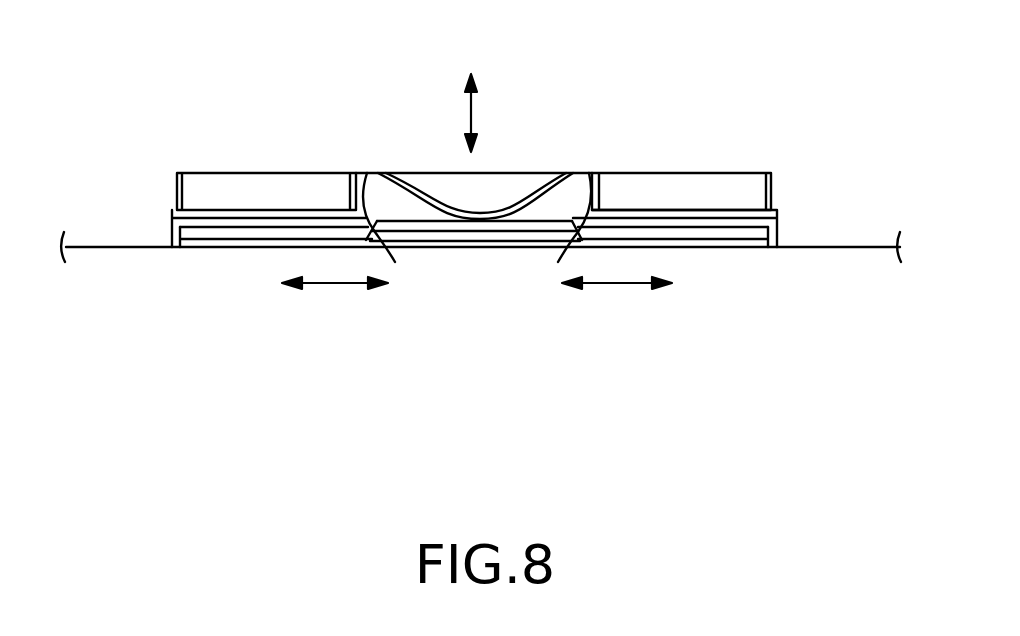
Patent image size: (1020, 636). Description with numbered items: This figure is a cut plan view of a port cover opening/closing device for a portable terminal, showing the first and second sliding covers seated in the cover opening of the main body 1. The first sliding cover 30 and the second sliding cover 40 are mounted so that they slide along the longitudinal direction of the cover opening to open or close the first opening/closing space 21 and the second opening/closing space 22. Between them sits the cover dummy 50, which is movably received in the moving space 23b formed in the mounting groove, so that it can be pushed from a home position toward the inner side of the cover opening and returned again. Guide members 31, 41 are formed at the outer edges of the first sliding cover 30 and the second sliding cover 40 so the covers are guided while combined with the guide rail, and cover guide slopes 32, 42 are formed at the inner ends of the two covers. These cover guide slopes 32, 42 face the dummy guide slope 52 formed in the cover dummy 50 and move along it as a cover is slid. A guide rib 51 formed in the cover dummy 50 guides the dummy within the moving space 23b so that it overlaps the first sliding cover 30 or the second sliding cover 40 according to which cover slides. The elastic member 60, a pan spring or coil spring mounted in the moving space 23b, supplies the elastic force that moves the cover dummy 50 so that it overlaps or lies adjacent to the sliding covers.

The main body 1 is at (833, 233).
The first opening/closing space 21 is at (173, 247).
The second opening/closing space 22 is at (668, 210).
The moving space 23b is at (520, 183).
The first sliding cover 30 is at (237, 248).
The guide member 31 is at (220, 232).
The cover guide slope 32 is at (393, 250).
The second sliding cover 40 is at (718, 250).
The guide member 41 is at (744, 233).
The cover guide slope 42 is at (585, 185).
The cover dummy 50 is at (440, 247).
The guide rib 51 is at (485, 231).
The dummy guide slope 52 is at (367, 173).
The elastic member 60 is at (421, 188).